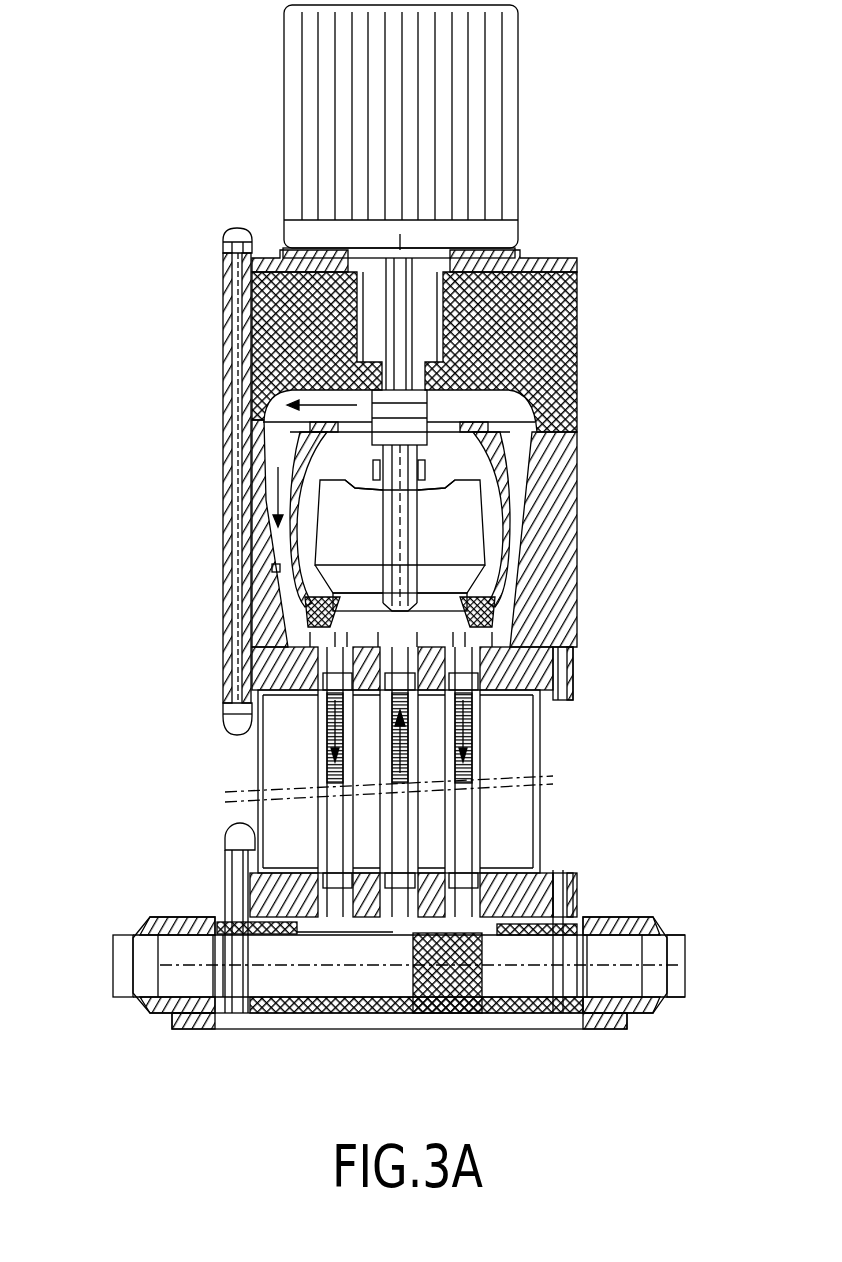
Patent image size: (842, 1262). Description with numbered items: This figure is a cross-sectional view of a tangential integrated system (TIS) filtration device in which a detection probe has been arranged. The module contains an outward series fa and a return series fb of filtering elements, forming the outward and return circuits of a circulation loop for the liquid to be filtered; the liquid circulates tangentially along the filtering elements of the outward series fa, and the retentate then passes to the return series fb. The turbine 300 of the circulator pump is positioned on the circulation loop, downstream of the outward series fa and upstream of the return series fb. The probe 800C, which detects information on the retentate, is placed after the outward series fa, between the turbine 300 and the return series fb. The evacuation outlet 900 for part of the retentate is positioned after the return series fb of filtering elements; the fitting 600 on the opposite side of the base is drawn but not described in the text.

The turbine 300 is at (284, 161).
The probe 800C is at (272, 568).
The return series of filtering elements fb is at (470, 762).
The outward series of filtering elements fa is at (395, 832).
The evacuation outlet 900 is at (130, 958).
The outlet fitting 600 is at (668, 955).